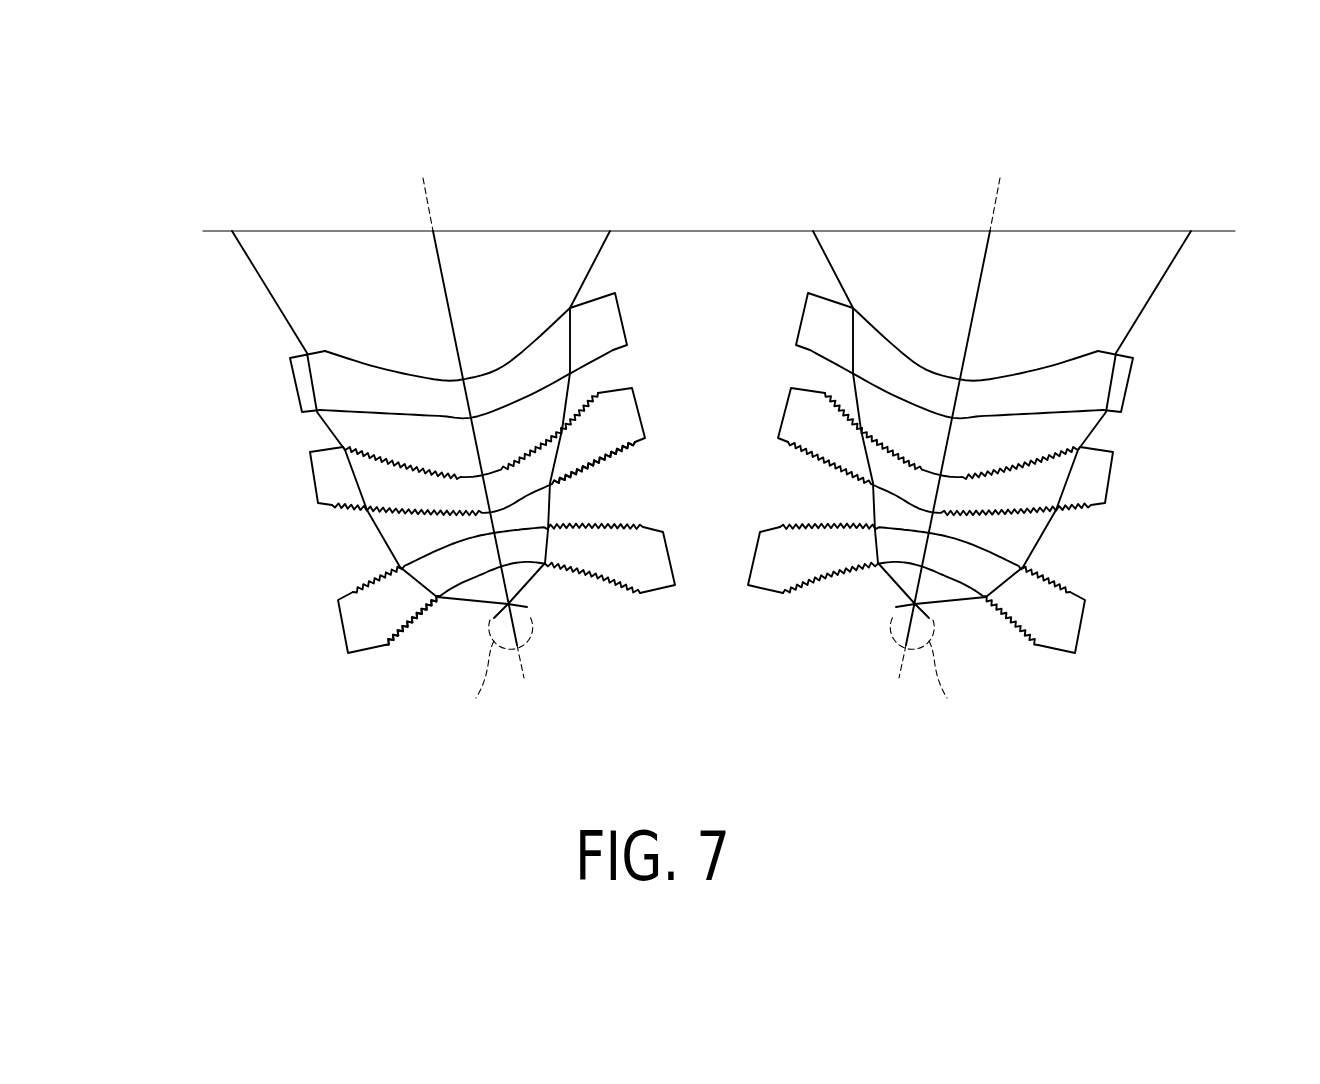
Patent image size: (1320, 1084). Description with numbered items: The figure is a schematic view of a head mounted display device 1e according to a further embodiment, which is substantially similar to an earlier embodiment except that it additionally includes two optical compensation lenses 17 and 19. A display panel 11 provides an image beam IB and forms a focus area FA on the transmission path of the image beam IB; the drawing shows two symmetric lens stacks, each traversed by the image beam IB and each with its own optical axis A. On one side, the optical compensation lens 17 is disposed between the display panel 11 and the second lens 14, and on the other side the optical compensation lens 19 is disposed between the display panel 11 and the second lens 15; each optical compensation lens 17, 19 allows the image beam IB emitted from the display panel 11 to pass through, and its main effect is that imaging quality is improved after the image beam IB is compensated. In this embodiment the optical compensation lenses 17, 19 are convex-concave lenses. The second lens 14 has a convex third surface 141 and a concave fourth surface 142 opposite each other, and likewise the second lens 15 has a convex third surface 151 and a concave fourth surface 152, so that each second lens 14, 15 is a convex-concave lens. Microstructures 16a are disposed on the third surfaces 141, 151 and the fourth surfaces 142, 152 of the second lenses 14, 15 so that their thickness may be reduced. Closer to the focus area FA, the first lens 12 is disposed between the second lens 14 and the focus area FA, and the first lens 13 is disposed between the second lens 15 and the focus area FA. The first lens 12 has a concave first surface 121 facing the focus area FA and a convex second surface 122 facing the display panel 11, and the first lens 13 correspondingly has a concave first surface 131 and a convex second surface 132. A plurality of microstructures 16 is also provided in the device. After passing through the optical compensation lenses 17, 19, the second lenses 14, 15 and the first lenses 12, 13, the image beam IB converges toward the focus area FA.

The head mounted display device 1e is at (1138, 136).
The display panel 11 is at (248, 230).
The optical axis A is at (432, 198).
The image beam IB is at (273, 305).
The focus area FA is at (709, 678).
The optical compensation lens 17 is at (308, 383).
The optical compensation lens 19 is at (1103, 383).
The second lens 14 is at (215, 475).
The fourth surface 142 is at (312, 450).
The third surface 141 is at (322, 507).
The first lens 12 is at (215, 593).
The second surface 122 is at (340, 596).
The first surface 121 is at (350, 656).
The microstructures 16 is at (402, 633).
The microstructures 16a is at (622, 458).
The second lens 15 is at (1025, 479).
The fourth surface 152 is at (1017, 459).
The third surface 151 is at (999, 506).
The first lens 13 is at (1010, 607).
The second surface 132 is at (995, 584).
The first surface 131 is at (996, 626).